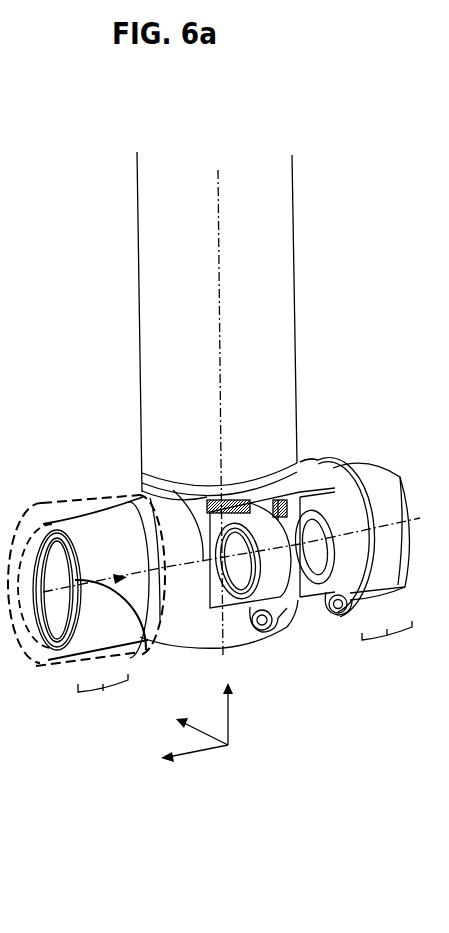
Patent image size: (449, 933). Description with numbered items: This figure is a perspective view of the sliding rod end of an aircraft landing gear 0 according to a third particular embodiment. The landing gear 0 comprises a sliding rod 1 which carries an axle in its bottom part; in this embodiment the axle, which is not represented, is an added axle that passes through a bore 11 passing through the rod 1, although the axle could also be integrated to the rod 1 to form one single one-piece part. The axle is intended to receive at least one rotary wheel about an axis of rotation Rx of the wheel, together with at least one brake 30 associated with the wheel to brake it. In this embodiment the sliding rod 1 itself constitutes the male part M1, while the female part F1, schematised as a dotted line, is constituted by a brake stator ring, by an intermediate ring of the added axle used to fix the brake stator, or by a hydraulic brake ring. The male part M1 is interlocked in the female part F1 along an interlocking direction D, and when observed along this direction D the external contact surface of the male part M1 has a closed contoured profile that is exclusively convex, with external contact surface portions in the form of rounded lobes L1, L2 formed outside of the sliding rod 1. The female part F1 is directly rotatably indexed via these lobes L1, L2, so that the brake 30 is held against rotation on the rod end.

The landing gear 0 is at (146, 170).
The sliding rod 1 is at (172, 247).
The bore 11 is at (74, 578).
The brake 30 is at (67, 665).
The male part M1 is at (73, 537).
The female part F1 is at (58, 667).
The rounded lobe L1 is at (35, 633).
The rounded lobe L2 is at (41, 526).
The interlocking direction D is at (145, 637).
The axis of rotation Rx is at (378, 527).